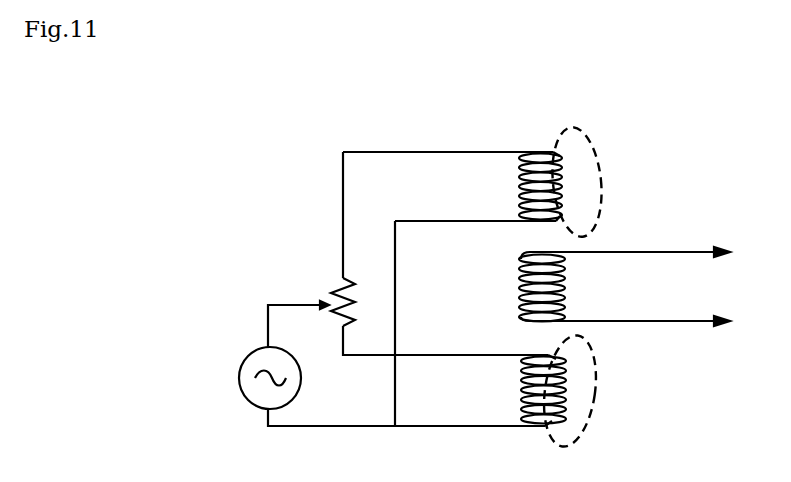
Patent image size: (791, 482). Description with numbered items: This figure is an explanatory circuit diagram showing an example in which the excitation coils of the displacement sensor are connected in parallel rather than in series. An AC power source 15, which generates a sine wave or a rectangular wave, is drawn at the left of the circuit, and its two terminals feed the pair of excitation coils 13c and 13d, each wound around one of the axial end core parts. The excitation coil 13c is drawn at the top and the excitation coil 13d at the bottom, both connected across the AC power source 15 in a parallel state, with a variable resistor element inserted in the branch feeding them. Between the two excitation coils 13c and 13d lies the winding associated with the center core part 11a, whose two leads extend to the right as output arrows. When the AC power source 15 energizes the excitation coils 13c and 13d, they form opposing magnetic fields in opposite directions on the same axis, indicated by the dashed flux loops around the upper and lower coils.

The AC power source 15 is at (241, 357).
The excitation coil 13c is at (518, 190).
The center core part 11a is at (519, 288).
The excitation coil 13d is at (521, 392).